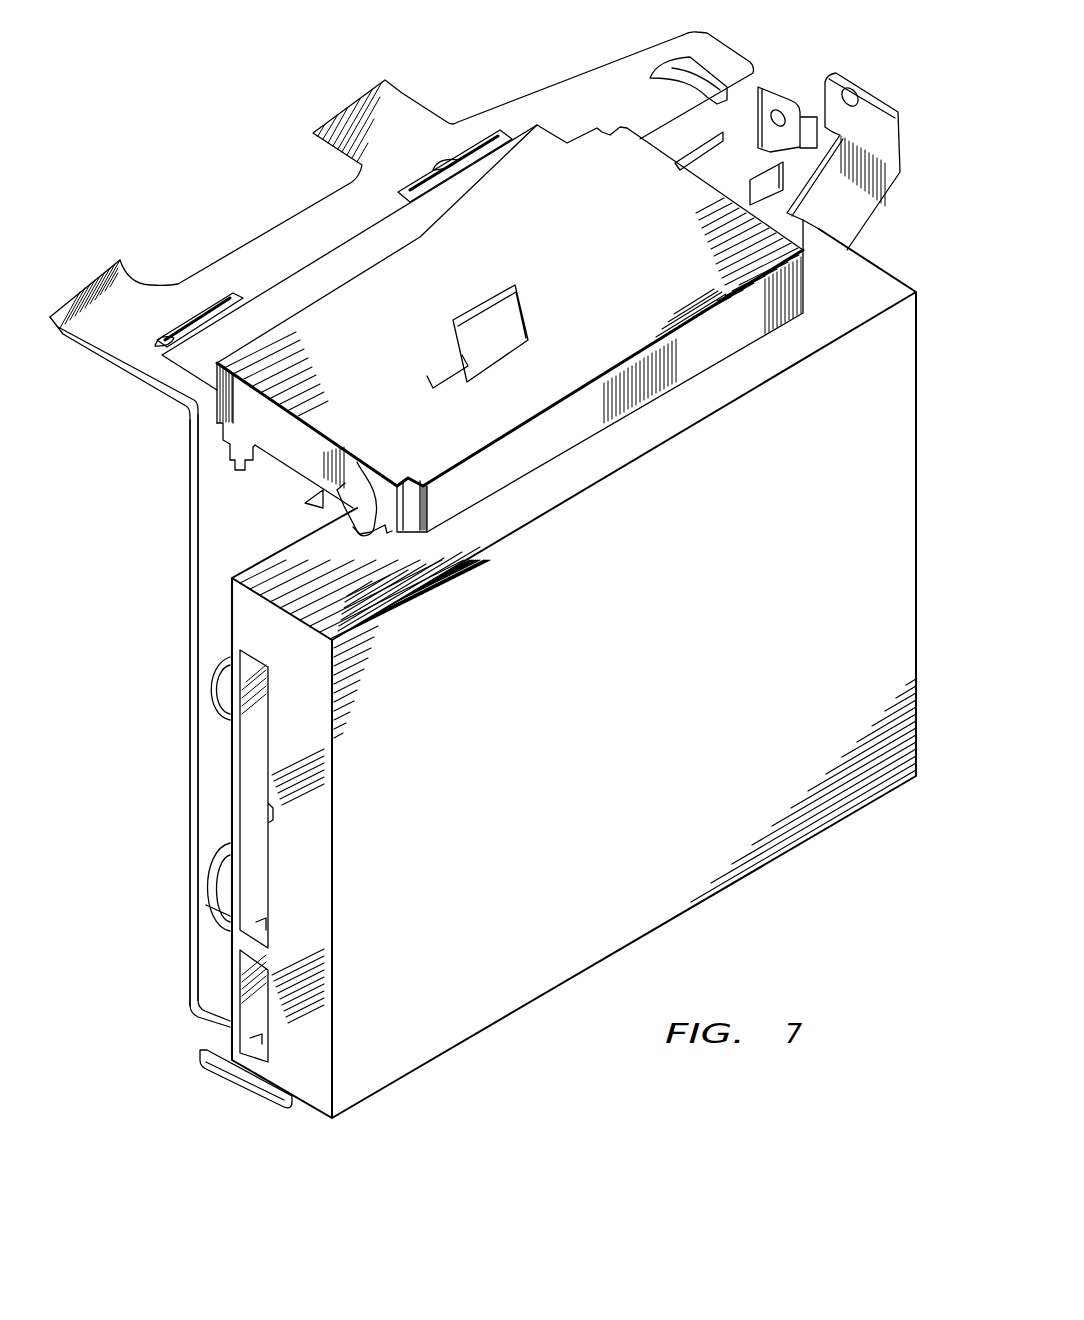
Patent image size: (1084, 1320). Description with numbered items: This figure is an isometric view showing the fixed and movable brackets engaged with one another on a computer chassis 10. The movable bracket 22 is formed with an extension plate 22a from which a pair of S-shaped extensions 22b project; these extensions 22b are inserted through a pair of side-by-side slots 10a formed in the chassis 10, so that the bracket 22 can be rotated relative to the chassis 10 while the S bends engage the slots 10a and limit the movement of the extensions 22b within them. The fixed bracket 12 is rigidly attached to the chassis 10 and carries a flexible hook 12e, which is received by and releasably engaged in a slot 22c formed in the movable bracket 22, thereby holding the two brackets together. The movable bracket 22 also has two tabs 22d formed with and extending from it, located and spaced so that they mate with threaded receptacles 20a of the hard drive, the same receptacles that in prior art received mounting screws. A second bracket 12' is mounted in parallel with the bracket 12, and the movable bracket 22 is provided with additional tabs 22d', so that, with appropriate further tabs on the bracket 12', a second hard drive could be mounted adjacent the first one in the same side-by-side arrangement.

The CPU chassis 10 is at (131, 376).
The slots 10a is at (448, 161).
The bracket 12 is at (776, 141).
The bracket 12' is at (211, 761).
The flexible hook 12e is at (497, 304).
The threaded receptacles 20a is at (360, 534).
The movable bracket 22 is at (302, 468).
The extension plate 22a is at (336, 248).
The S-shaped extensions 22b is at (488, 147).
The slot 22c is at (438, 374).
The tabs 22d is at (360, 472).
The tabs 22d' is at (236, 465).